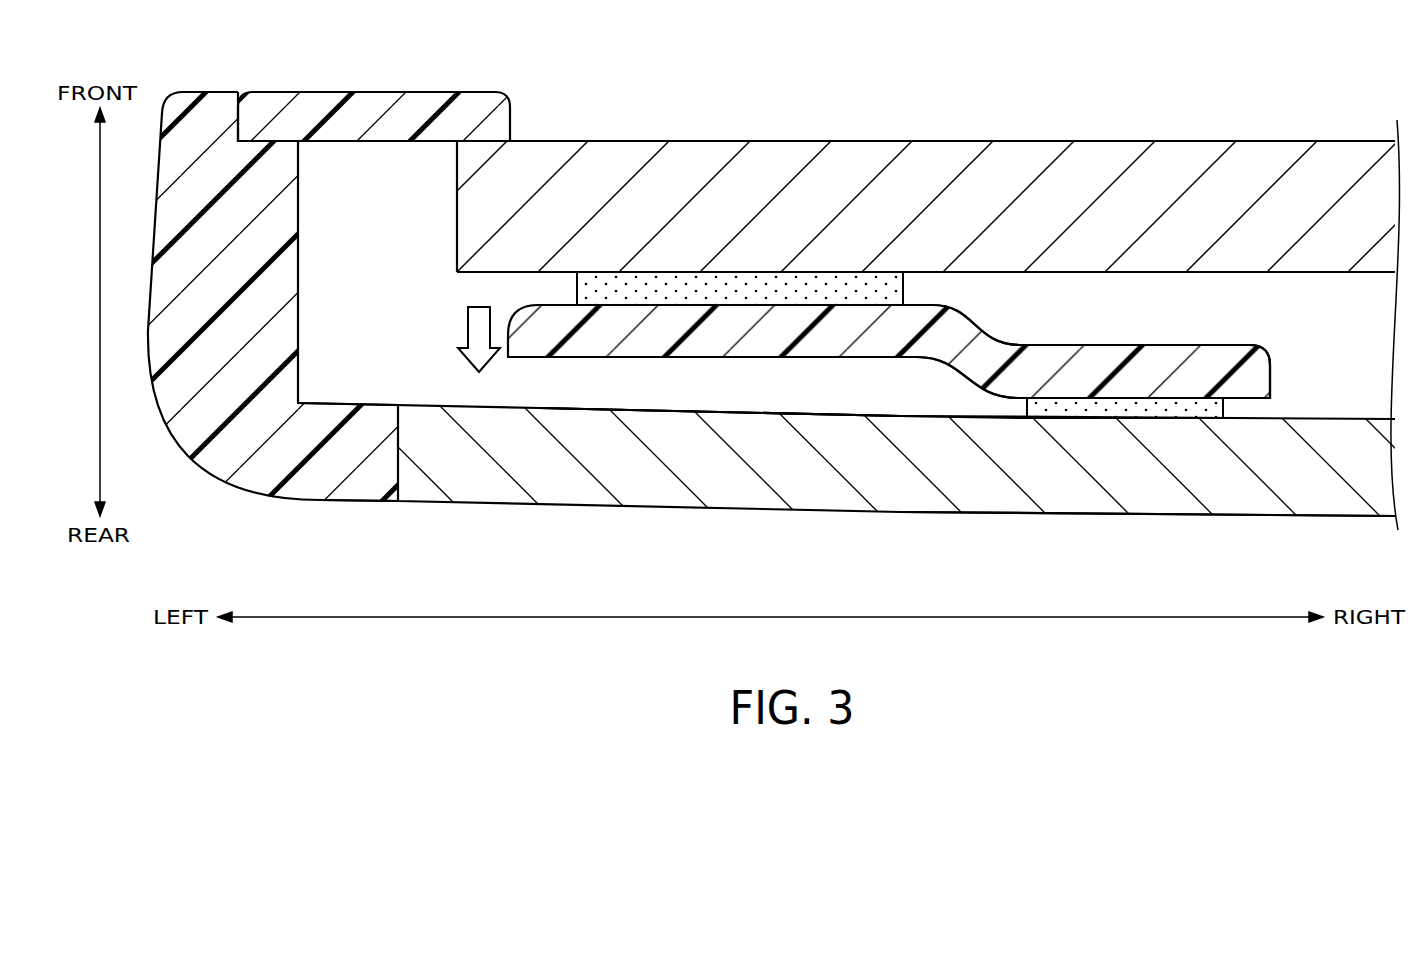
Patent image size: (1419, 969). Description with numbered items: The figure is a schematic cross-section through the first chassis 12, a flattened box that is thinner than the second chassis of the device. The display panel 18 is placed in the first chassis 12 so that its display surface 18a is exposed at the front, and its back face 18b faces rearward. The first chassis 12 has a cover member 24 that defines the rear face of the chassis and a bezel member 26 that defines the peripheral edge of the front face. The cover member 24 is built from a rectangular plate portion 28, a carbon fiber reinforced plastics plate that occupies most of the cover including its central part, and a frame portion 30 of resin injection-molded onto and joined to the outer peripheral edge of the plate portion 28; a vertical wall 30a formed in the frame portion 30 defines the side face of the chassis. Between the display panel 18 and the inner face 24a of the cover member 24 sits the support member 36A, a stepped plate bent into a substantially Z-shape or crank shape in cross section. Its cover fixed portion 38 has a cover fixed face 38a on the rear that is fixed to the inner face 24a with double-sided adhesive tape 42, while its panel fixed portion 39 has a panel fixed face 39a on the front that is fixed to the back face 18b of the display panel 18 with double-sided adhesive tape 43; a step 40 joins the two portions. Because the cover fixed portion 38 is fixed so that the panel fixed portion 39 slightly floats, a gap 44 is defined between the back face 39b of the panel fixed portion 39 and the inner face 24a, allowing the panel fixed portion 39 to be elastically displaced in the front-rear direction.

The first chassis 12 is at (99, 23).
The display panel 18 is at (913, 138).
The display surface 18a is at (816, 139).
The back face of display panel 18b is at (1290, 288).
The cover member 24 is at (648, 516).
The inner face of cover member 24a is at (838, 417).
The bezel member 26 is at (352, 105).
The plate portion 28 is at (1208, 520).
The frame portion 30 is at (240, 494).
The vertical wall 30a is at (222, 107).
The support member 36A is at (1060, 297).
The cover fixed portion 38 is at (1130, 378).
The cover fixed face 38a is at (1243, 402).
The panel fixed portion 39 is at (660, 323).
The panel fixed face 39a is at (553, 304).
The back face of panel fixed portion 39b is at (528, 358).
The step 40 is at (977, 367).
The double-sided adhesive tape 42 is at (1052, 405).
The double-sided adhesive tape 43 is at (737, 292).
The gap 44 is at (742, 387).